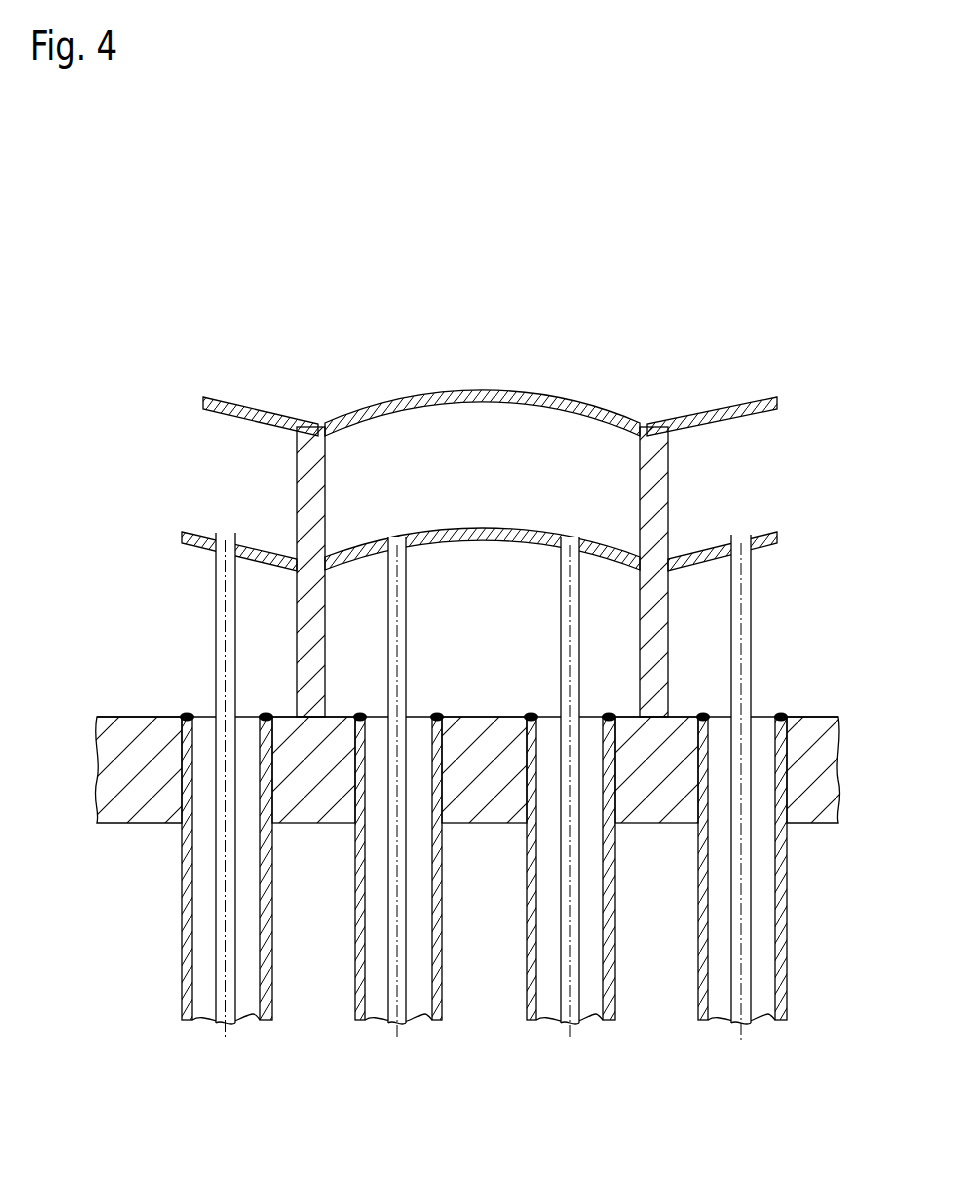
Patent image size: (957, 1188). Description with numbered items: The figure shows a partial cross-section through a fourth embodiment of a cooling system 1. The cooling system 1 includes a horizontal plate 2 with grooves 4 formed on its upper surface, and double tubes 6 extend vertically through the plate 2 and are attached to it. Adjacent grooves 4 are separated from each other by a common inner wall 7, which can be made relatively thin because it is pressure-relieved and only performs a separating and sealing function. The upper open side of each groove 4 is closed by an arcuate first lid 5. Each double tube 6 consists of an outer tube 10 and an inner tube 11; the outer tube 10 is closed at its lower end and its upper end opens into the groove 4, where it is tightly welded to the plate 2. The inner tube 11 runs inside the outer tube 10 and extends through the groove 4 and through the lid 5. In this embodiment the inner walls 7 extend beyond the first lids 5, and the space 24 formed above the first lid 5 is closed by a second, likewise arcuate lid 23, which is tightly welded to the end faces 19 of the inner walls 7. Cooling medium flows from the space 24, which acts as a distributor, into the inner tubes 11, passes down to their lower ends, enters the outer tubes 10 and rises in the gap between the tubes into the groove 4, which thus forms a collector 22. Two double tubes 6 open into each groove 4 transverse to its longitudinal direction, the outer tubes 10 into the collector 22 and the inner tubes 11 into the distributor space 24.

The cooling system 1 is at (312, 218).
The horizontal plate 2 is at (108, 714).
The groove 4 is at (198, 493).
The lid 5 is at (355, 548).
The double tube 6 is at (525, 930).
The inner wall 7 is at (297, 520).
The outer tube 10 is at (442, 980).
The inner tube 11 is at (561, 654).
The end face 19 is at (308, 421).
The collector 22 is at (494, 596).
The second lid 23 is at (590, 405).
The space 24 is at (494, 477).